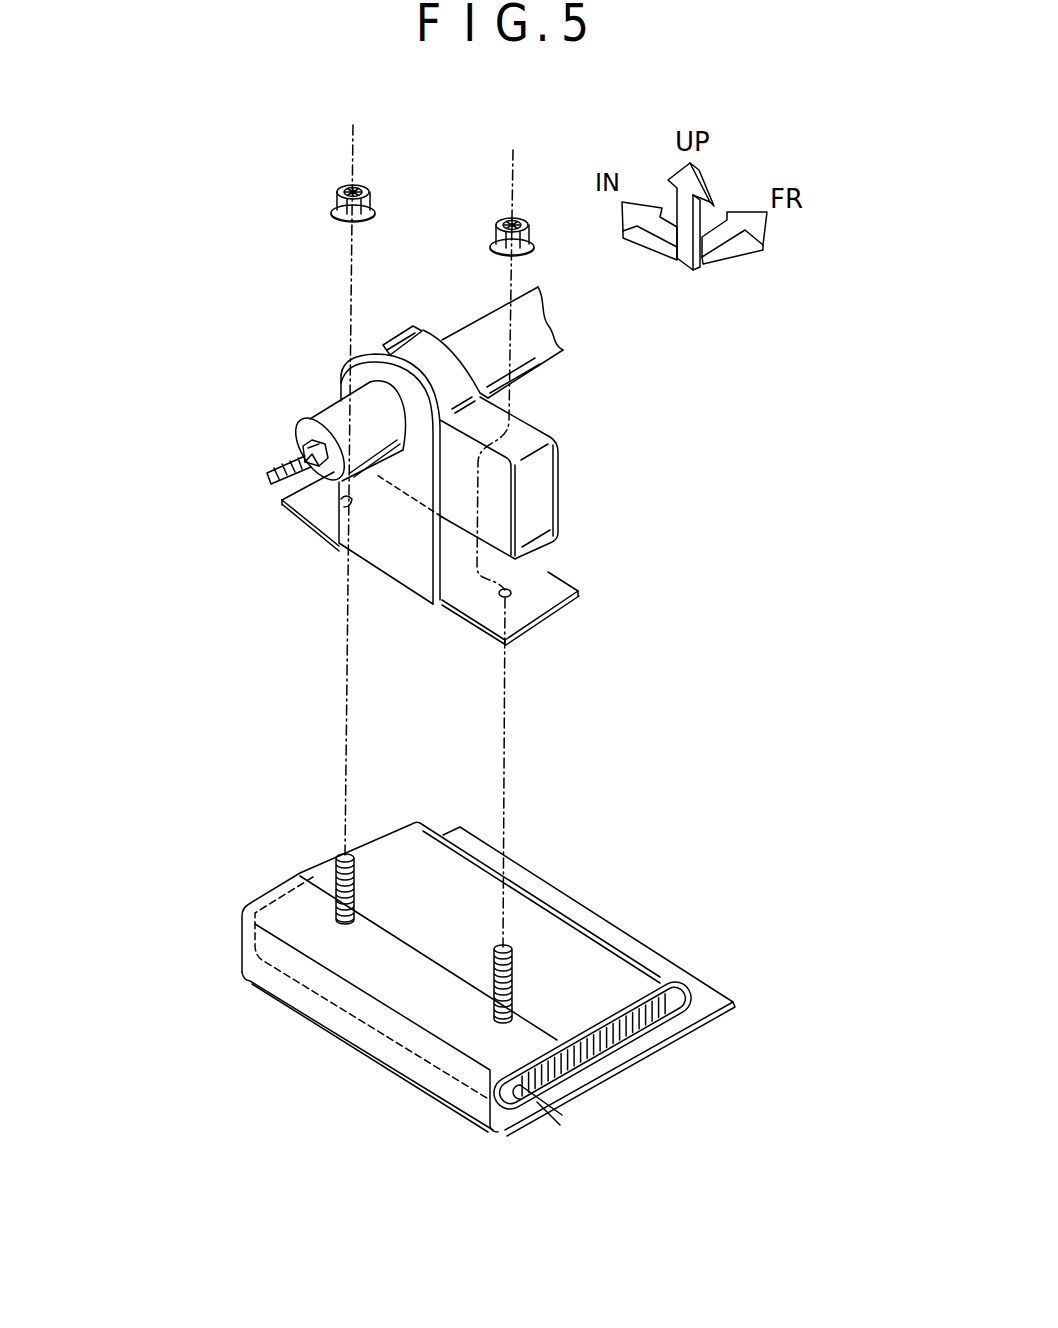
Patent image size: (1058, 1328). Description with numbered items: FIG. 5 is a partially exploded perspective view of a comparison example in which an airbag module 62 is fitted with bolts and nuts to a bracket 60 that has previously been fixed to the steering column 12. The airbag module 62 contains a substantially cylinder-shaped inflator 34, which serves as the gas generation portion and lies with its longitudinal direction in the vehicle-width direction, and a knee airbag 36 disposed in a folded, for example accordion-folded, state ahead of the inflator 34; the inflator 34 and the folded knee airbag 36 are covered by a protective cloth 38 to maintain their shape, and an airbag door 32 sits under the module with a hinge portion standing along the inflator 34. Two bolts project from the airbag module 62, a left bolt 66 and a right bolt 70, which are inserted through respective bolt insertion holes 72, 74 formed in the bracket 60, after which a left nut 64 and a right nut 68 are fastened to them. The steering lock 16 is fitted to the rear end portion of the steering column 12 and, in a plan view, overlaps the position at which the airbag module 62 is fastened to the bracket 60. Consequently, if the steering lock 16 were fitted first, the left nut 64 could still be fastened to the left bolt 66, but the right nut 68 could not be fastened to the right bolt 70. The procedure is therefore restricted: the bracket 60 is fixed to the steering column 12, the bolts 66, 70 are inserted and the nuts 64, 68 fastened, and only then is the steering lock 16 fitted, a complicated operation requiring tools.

The steering column 12 is at (460, 343).
The steering lock 16 is at (561, 481).
The airbag door 32 is at (370, 1065).
The inflator 34 is at (522, 1118).
The knee airbag 36 is at (606, 1060).
The protective cloth 38 is at (592, 955).
The bracket 60 is at (442, 558).
The airbag module 62 is at (488, 1002).
The left nut 64 is at (369, 200).
The left bolt 66 is at (362, 852).
The right nut 68 is at (530, 236).
The right bolt 70 is at (518, 958).
The bolt insertion hole 72 is at (345, 512).
The bolt insertion hole 74 is at (511, 593).